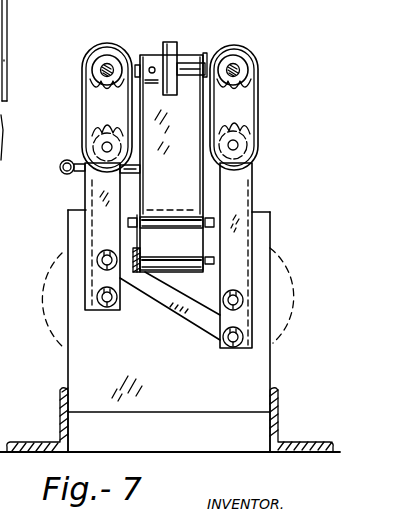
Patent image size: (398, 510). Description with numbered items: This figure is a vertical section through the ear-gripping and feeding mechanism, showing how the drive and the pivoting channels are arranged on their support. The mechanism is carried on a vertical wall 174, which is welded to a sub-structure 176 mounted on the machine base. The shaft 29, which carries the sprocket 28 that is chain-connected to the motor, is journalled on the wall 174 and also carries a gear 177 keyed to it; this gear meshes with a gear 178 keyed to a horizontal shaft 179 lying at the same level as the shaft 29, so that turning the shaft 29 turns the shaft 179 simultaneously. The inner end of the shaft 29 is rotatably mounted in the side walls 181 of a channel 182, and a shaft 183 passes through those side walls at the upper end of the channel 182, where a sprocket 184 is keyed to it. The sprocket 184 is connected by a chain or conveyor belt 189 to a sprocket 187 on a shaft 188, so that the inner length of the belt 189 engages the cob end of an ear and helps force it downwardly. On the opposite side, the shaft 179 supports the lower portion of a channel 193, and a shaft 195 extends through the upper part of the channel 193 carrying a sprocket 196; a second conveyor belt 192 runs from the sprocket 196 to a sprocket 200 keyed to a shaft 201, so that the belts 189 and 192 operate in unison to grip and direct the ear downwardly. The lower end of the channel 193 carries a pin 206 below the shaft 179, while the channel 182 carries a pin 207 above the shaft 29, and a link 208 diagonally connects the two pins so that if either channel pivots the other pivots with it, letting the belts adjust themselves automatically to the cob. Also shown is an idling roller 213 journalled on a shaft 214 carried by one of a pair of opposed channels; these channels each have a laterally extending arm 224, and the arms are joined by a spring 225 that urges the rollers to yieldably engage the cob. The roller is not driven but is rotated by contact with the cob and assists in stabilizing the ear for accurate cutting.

The sprocket 28 is at (9, 15).
The shaft 29 is at (107, 307).
The vertical wall 174 is at (263, 383).
The sub-structure 176 is at (279, 418).
The gear 177 is at (52, 321).
The gear 178 is at (282, 286).
The horizontal shaft 179 is at (225, 297).
The side walls 181 is at (96, 228).
The channel 182 is at (88, 199).
The shaft 183 is at (101, 147).
The sprocket 184 is at (98, 138).
The sprocket 187 is at (96, 60).
The shaft 188 is at (110, 58).
The conveyor belt 189 is at (88, 86).
The conveyor belt 192 is at (254, 96).
The channel 193 is at (244, 186).
The shaft 195 is at (238, 144).
The sprocket 196 is at (245, 150).
The sprocket 200 is at (240, 53).
The shaft 201 is at (240, 65).
The pin 206 is at (236, 348).
The pin 207 is at (104, 259).
The link 208 is at (198, 318).
The idling roller 213 is at (170, 42).
The shaft 214 is at (183, 63).
The laterally extending arm 224 is at (133, 171).
The spring 225 is at (72, 174).